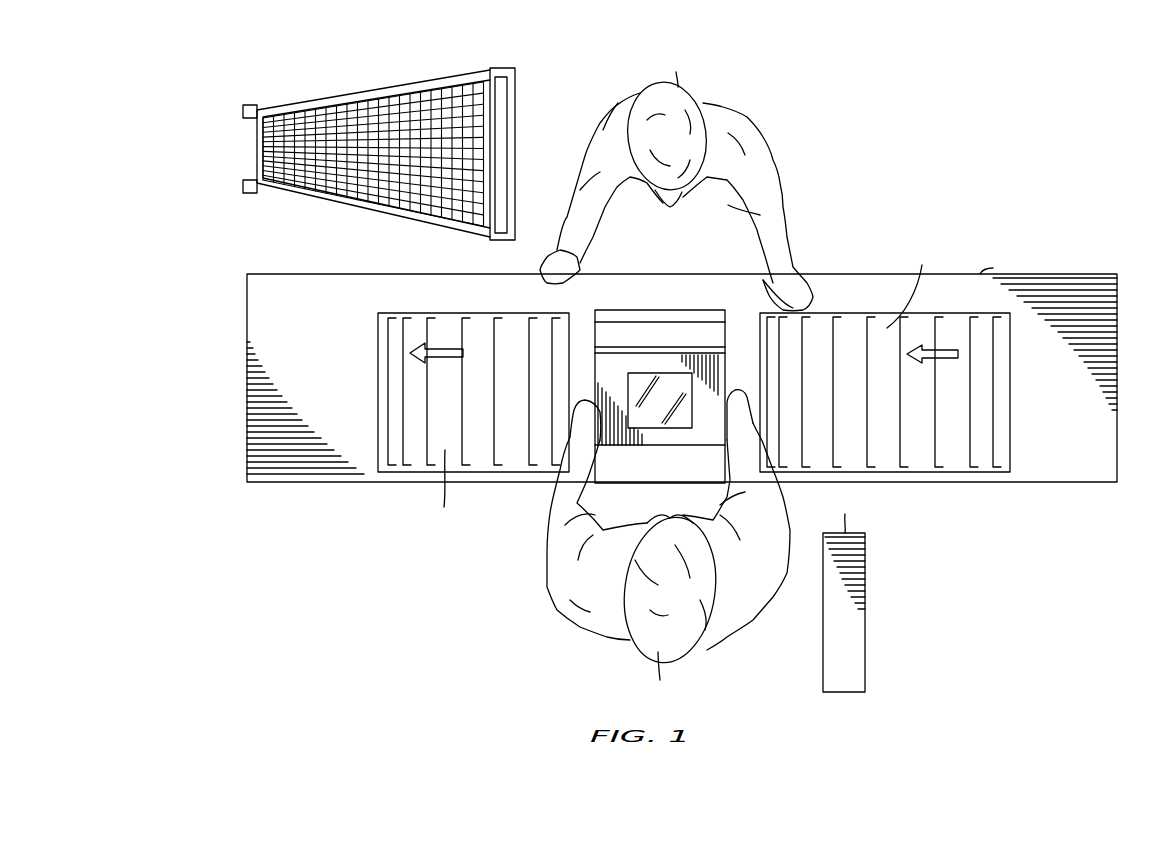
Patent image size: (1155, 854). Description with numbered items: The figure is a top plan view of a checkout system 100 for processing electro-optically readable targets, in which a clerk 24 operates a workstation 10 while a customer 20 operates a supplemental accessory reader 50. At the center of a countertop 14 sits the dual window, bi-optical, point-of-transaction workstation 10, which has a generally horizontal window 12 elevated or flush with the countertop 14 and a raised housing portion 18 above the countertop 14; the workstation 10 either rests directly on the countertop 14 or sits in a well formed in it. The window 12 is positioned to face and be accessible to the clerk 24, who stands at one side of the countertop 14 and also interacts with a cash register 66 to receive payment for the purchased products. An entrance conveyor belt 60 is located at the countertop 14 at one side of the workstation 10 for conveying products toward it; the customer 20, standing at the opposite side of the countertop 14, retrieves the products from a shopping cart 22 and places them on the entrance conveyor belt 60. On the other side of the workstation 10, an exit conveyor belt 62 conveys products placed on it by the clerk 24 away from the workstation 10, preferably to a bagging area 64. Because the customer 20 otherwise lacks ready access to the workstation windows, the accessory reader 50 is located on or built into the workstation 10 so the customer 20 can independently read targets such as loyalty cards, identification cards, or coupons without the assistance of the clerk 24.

The checkout system 100 is at (825, 140).
The countertop 14 is at (1095, 297).
The bagging area 64 is at (263, 397).
The exit conveyor belt 62 is at (513, 452).
The entrance conveyor belt 60 is at (852, 328).
The point-of-transaction workstation 10 is at (668, 443).
The raised housing portion 18 is at (603, 333).
The horizontal window 12 is at (640, 423).
The accessory reader 50 is at (700, 310).
The cash register 66 is at (860, 615).
The shopping cart 22 is at (350, 203).
The customer 20 is at (730, 140).
The clerk 24 is at (733, 618).